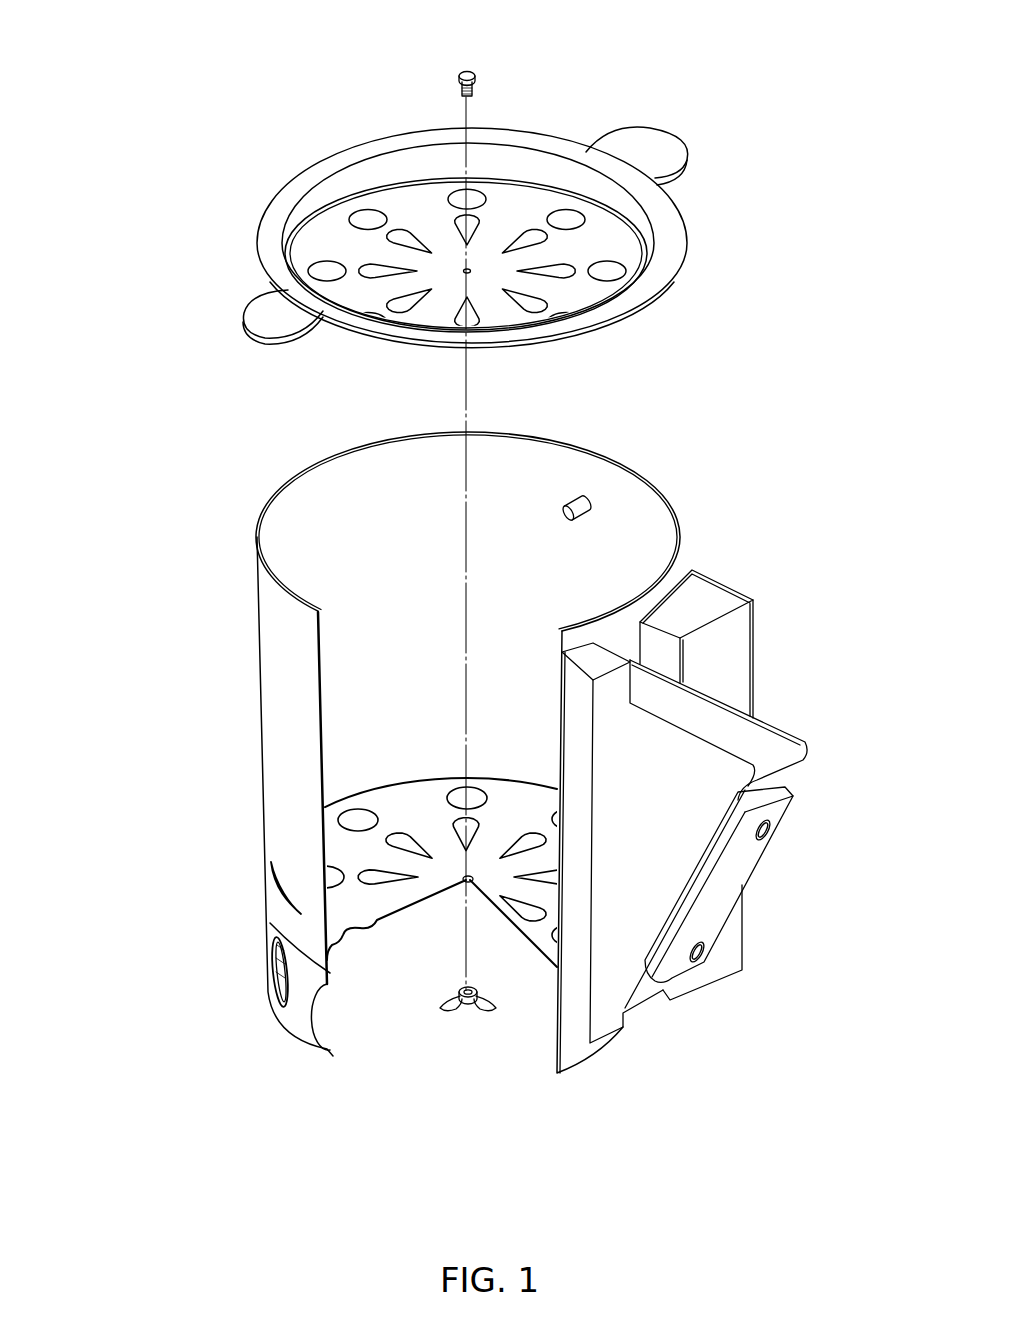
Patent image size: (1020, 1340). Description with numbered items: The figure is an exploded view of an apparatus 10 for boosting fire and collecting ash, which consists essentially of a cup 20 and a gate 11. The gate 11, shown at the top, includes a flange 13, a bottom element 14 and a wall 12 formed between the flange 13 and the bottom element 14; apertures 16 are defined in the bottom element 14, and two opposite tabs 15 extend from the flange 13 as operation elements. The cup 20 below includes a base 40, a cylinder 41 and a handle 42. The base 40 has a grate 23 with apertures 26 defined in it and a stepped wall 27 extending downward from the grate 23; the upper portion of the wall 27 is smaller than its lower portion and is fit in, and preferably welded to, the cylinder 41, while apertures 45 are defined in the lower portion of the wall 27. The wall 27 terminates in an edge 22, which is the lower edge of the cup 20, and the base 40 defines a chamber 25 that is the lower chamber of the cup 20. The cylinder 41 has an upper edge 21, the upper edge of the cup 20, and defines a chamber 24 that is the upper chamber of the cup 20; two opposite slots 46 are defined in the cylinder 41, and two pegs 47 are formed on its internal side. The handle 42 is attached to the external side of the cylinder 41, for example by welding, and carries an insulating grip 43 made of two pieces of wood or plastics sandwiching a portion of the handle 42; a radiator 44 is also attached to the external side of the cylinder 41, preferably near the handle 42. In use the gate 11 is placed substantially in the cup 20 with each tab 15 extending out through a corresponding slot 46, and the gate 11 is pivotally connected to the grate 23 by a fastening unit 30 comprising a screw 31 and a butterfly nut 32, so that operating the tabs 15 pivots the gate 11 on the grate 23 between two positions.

The apparatus 10 is at (95, 330).
The gate 11 is at (172, 279).
The wall 12 is at (592, 190).
The flange 13 is at (292, 184).
The bottom element 14 is at (625, 253).
The tabs 15 is at (673, 148).
The apertures 16 is at (560, 276).
The cup 20 is at (248, 590).
The upper edge 21 is at (645, 478).
The edge 22 is at (330, 1058).
The grate 23 is at (343, 852).
The chamber 24 is at (362, 474).
The chamber 25 is at (532, 1052).
The apertures 26 is at (453, 823).
The wall 27 is at (306, 975).
The fastening unit 30 is at (487, 62).
The screw 31 is at (463, 73).
The butterfly nut 32 is at (490, 1013).
The base 40 is at (630, 1032).
The cylinder 41 is at (670, 568).
The handle 42 is at (767, 740).
The insulating grip 43 is at (766, 848).
The radiator 44 is at (722, 970).
The apertures 45 is at (283, 985).
The slots 46 is at (278, 897).
The pegs 47 is at (573, 498).